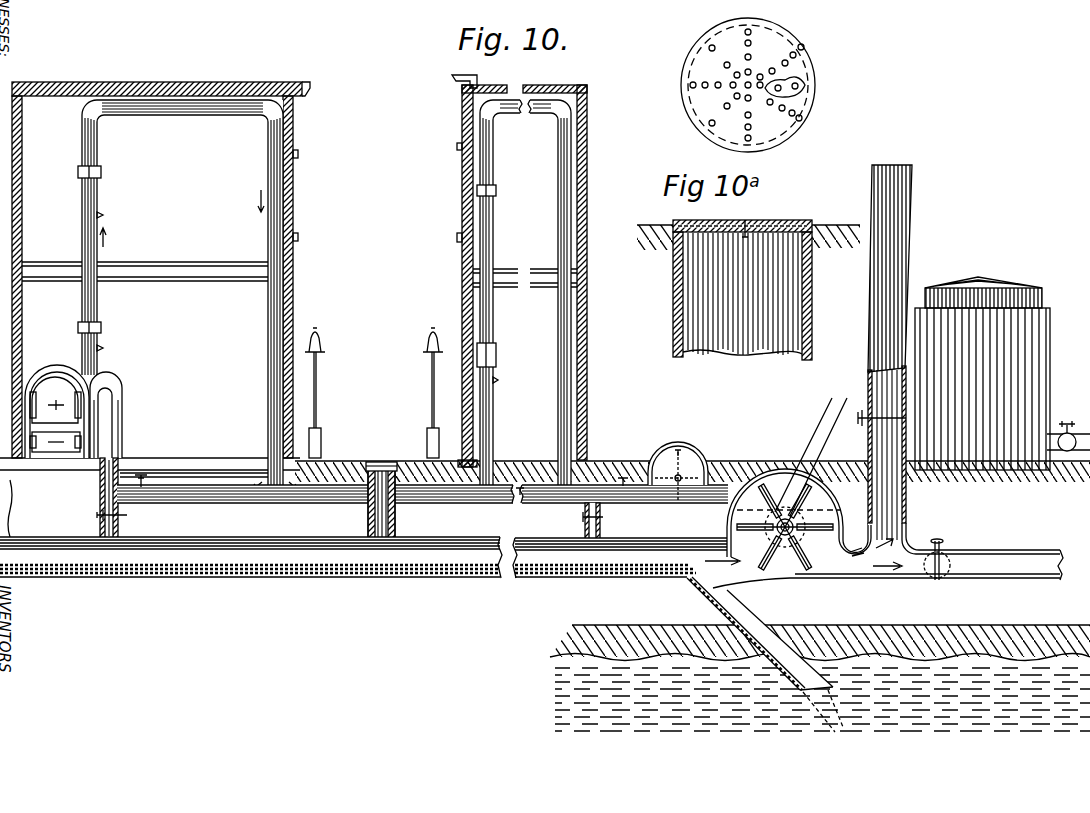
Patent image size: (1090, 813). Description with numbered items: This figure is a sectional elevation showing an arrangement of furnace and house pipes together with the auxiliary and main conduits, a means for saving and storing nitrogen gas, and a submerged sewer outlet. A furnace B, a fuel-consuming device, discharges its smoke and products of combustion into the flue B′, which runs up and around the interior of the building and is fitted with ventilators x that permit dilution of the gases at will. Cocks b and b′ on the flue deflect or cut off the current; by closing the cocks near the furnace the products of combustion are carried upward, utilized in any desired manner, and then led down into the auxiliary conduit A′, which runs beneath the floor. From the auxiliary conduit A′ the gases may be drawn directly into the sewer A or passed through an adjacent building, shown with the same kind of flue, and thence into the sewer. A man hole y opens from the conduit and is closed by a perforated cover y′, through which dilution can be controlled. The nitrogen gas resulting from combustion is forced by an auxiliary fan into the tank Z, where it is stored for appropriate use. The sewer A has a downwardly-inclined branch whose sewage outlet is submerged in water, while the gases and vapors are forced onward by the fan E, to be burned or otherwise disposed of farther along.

In FIG. 10, the sewer A is at (531, 634).
In FIG. 10, the auxiliary conduit A′ is at (422, 500).
In FIG. 10, the furnace B is at (57, 400).
In FIG. 10, the flue B′ is at (266, 313).
In FIG. 10, the ventilator x is at (296, 264).
In FIG. 10, the cock b is at (305, 303).
In FIG. 10, the cock b′ is at (106, 405).
In FIG. 10, the man hole y is at (391, 505).
In FIG. 10A, the man hole y is at (748, 292).
In FIG. 10, the perforated cover y′ is at (381, 456).
In FIG. 10A, the perforated cover y′ is at (759, 125).
In FIG. 10, the fan E is at (799, 484).
In FIG. 10, the tank Z is at (1068, 413).